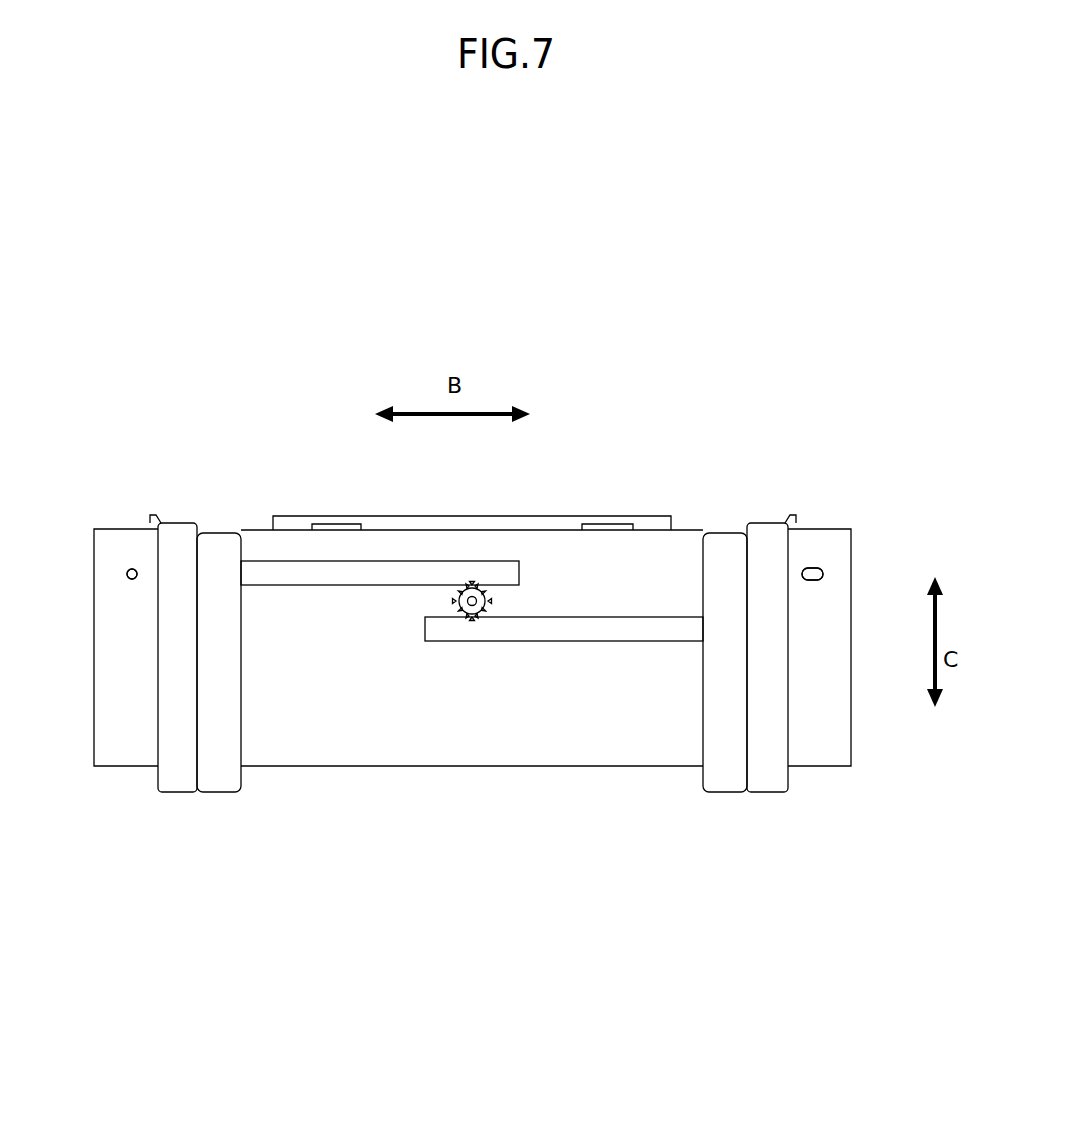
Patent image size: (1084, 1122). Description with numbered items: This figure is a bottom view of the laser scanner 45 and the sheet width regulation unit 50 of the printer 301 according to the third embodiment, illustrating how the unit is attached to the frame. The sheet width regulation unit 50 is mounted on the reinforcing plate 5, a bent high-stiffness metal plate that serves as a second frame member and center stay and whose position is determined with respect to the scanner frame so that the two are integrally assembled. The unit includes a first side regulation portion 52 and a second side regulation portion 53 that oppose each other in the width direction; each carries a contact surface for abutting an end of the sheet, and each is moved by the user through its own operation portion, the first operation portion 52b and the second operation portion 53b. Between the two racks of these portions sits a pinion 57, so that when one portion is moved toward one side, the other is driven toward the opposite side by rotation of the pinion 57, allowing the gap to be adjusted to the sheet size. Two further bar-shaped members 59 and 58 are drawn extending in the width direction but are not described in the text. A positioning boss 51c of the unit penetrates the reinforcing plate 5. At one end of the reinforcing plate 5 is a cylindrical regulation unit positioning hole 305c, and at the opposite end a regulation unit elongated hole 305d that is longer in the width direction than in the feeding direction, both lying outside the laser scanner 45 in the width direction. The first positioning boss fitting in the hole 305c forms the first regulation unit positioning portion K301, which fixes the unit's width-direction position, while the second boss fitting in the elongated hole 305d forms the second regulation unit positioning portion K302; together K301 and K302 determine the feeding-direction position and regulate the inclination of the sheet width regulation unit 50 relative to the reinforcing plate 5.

The printer 301 is at (680, 328).
The sheet width regulation unit 50 is at (218, 838).
The reinforcing plate 5 is at (843, 697).
The second side regulation portion 53 is at (173, 792).
The second operation portion 53b is at (153, 517).
The first side regulation portion 52 is at (767, 792).
The first operation portion 52b is at (795, 518).
The laser scanner 45 is at (553, 522).
The upper slide bar 59 is at (261, 563).
The lower slide bar 58 is at (593, 632).
The pinion 57 is at (467, 615).
The positioning boss 51c is at (484, 591).
The regulation unit positioning hole 305c is at (130, 568).
The regulation unit elongated hole 305d is at (823, 573).
The first regulation unit positioning portion K301 is at (132, 598).
The second regulation unit positioning portion K302 is at (808, 603).